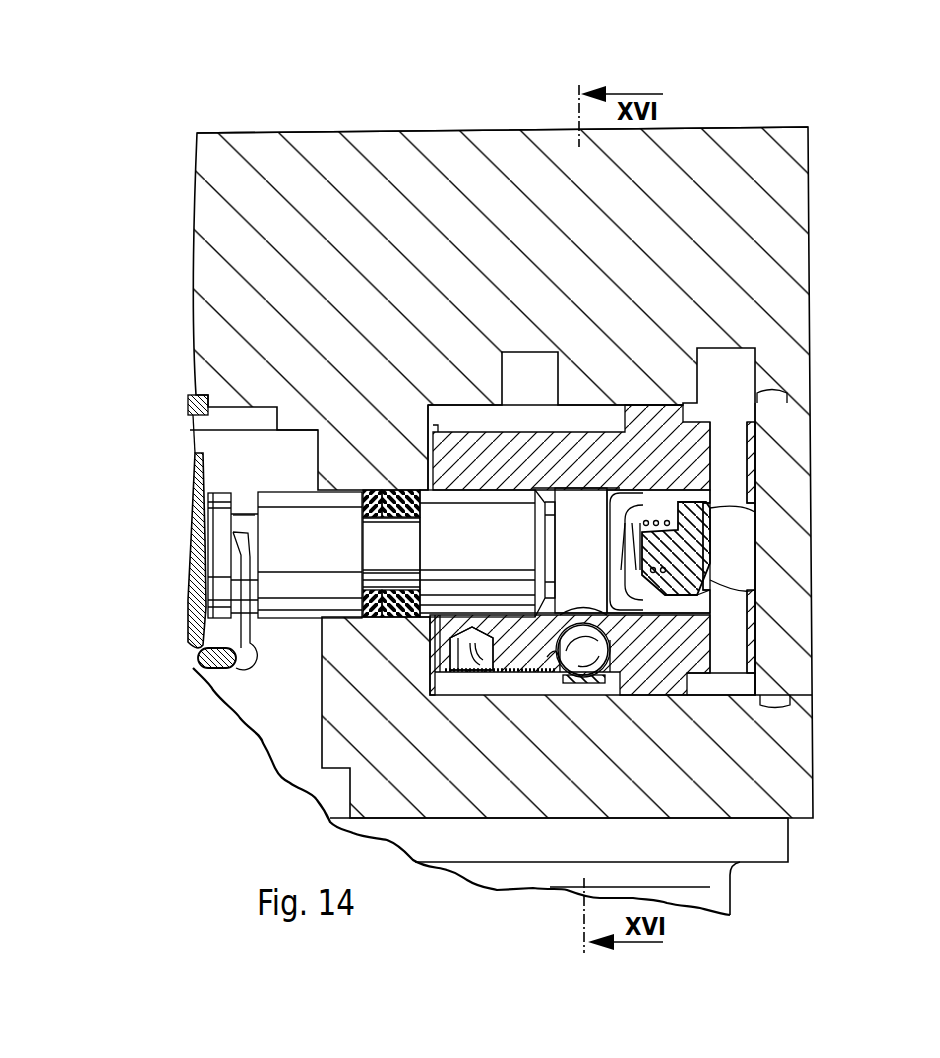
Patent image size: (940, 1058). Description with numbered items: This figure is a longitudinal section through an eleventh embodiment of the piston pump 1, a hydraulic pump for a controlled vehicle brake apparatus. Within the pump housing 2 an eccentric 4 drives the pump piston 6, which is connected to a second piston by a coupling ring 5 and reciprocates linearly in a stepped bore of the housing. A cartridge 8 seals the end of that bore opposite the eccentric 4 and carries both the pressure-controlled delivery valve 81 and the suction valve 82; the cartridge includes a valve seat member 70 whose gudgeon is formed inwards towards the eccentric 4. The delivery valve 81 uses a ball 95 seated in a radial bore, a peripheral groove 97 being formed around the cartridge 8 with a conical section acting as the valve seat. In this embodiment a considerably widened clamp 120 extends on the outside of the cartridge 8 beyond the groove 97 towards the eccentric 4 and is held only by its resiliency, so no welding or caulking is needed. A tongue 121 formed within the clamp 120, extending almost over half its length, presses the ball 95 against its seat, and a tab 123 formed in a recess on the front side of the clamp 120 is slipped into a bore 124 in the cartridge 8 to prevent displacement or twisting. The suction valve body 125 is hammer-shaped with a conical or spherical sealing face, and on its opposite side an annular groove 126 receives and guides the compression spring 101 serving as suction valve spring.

The piston pump 1 is at (817, 177).
The pump housing 2 is at (785, 240).
The eccentric 4 is at (258, 637).
The coupling ring 5 is at (243, 662).
The pump piston 6 is at (311, 557).
The cartridge 8 is at (822, 496).
The valve seat member 70 is at (790, 668).
The delivery valve 81 is at (560, 633).
The suction valve 82 is at (718, 507).
The ball 95 is at (583, 653).
The peripheral groove 97 is at (555, 660).
The compression spring 101 is at (648, 610).
The clamp 120 is at (481, 677).
The tongue 121 is at (592, 683).
The tab 123 is at (455, 637).
The bore 124 is at (457, 657).
The suction valve body 125 is at (757, 553).
The annular groove 126 is at (690, 590).